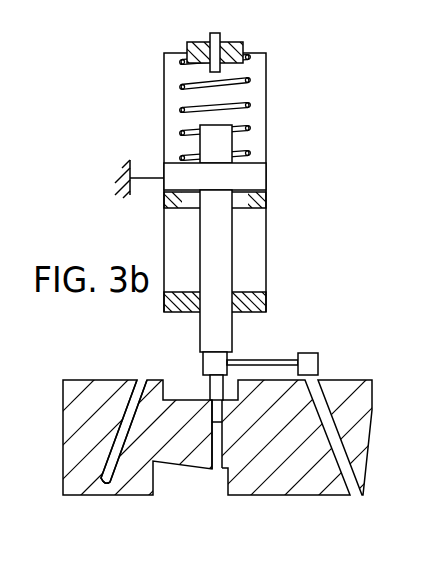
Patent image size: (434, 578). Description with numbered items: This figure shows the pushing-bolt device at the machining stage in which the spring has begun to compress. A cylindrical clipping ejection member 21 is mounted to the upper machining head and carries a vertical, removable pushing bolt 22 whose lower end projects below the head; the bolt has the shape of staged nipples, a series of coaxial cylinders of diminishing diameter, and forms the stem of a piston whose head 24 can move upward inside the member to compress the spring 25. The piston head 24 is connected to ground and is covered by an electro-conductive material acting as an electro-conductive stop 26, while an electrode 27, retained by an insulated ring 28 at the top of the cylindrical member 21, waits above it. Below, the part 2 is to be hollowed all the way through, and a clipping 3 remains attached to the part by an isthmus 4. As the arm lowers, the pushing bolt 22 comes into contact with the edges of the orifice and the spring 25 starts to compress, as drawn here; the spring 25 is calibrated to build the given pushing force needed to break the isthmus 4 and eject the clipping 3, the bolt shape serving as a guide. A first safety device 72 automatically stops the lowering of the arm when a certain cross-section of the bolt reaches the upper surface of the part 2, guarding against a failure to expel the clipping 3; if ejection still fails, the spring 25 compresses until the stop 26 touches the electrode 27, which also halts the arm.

The part 2 is at (348, 397).
The clipping 3 is at (158, 380).
The isthmus 4 is at (99, 490).
The cylindrical clipping ejection member 21 is at (268, 245).
The pushing bolt 22 is at (222, 332).
The piston head 24 is at (252, 180).
The spring 25 is at (252, 80).
The electro-conductive stop 26 is at (226, 143).
The electrode 27 is at (215, 33).
The insulated ring 28 is at (231, 46).
The first safety device 72 is at (306, 357).